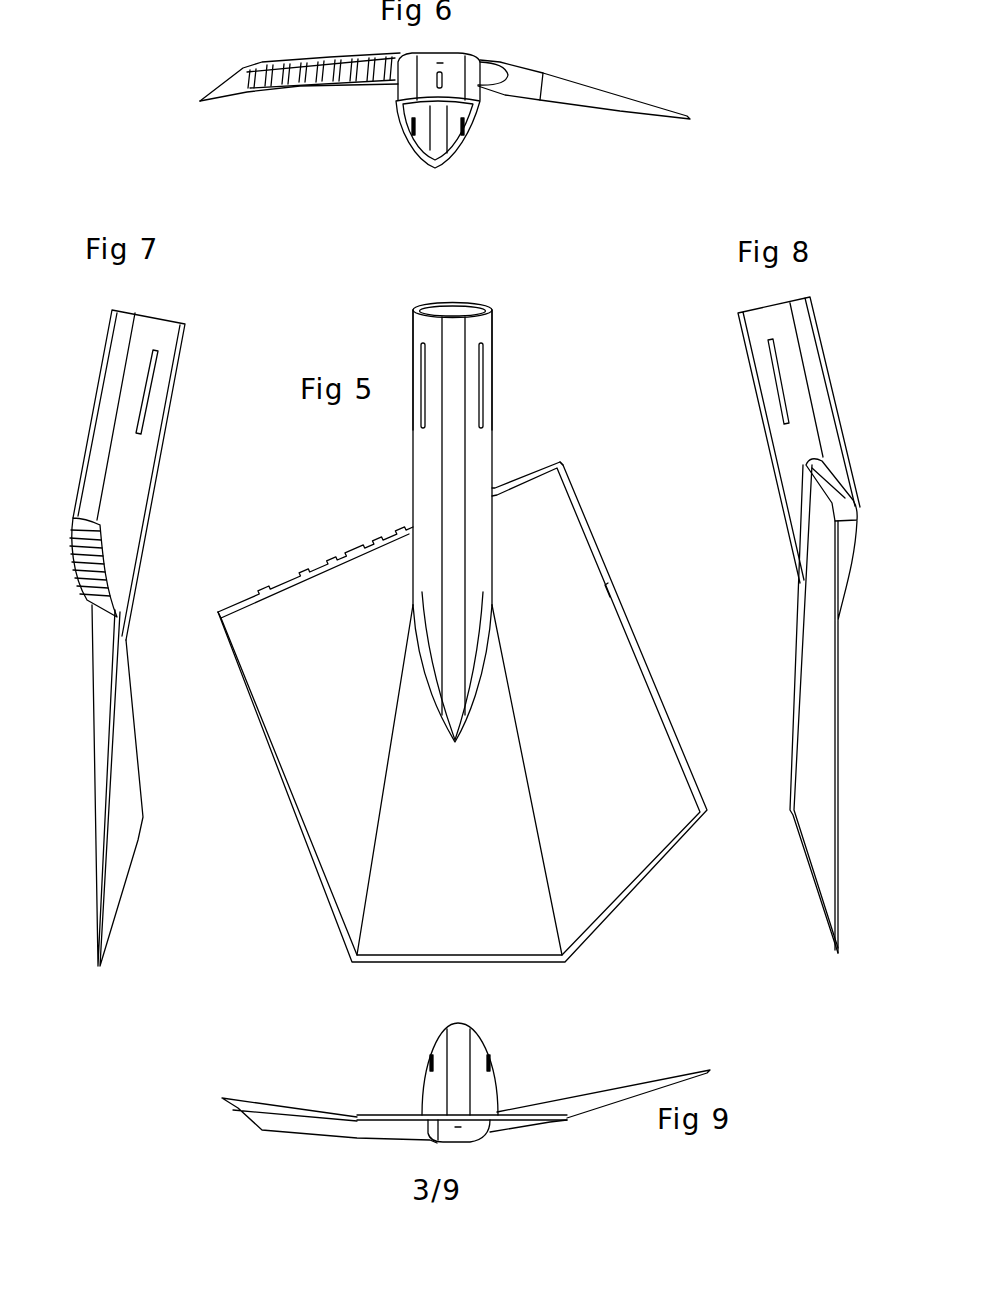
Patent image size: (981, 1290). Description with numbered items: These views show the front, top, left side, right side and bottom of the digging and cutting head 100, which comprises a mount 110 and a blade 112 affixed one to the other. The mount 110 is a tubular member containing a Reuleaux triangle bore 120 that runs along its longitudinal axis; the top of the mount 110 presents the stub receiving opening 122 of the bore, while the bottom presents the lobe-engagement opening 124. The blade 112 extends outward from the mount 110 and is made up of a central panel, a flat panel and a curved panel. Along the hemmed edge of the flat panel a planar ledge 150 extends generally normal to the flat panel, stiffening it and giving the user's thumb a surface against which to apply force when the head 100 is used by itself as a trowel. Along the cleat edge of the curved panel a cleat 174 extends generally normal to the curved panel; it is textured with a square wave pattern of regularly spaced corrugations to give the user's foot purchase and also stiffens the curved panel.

In FIG. 6, the digging and cutting head 100 is at (522, 140).
In FIG. 7, the digging and cutting head 100 is at (145, 897).
In FIG. 5, the digging and cutting head 100 is at (283, 887).
In FIG. 8, the digging and cutting head 100 is at (715, 410).
In FIG. 9, the digging and cutting head 100 is at (333, 1075).
In FIG. 7, the mount 110 is at (152, 500).
In FIG. 5, the mount 110 is at (413, 475).
In FIG. 8, the mount 110 is at (745, 353).
In FIG. 9, the mount 110 is at (498, 1075).
In FIG. 7, the blade 112 is at (138, 838).
In FIG. 5, the blade 112 is at (277, 765).
In FIG. 8, the blade 112 is at (795, 717).
In FIG. 9, the blade 112 is at (235, 1108).
In FIG. 6, the Reuleaux triangle bore 120 is at (425, 145).
In FIG. 5, the Reuleaux triangle bore 120 is at (445, 308).
In FIG. 6, the stub receiving opening 122 is at (458, 160).
In FIG. 7, the stub receiving opening 122 is at (148, 315).
In FIG. 5, the stub receiving opening 122 is at (488, 305).
In FIG. 9, the lobe-engagement opening 124 is at (443, 1130).
In FIG. 6, the planar ledge 150 is at (503, 63).
In FIG. 8, the planar ledge 150 is at (853, 490).
In FIG. 6, the cleat 174 is at (313, 58).
In FIG. 7, the cleat 174 is at (100, 563).
In FIG. 5, the cleat 174 is at (310, 568).